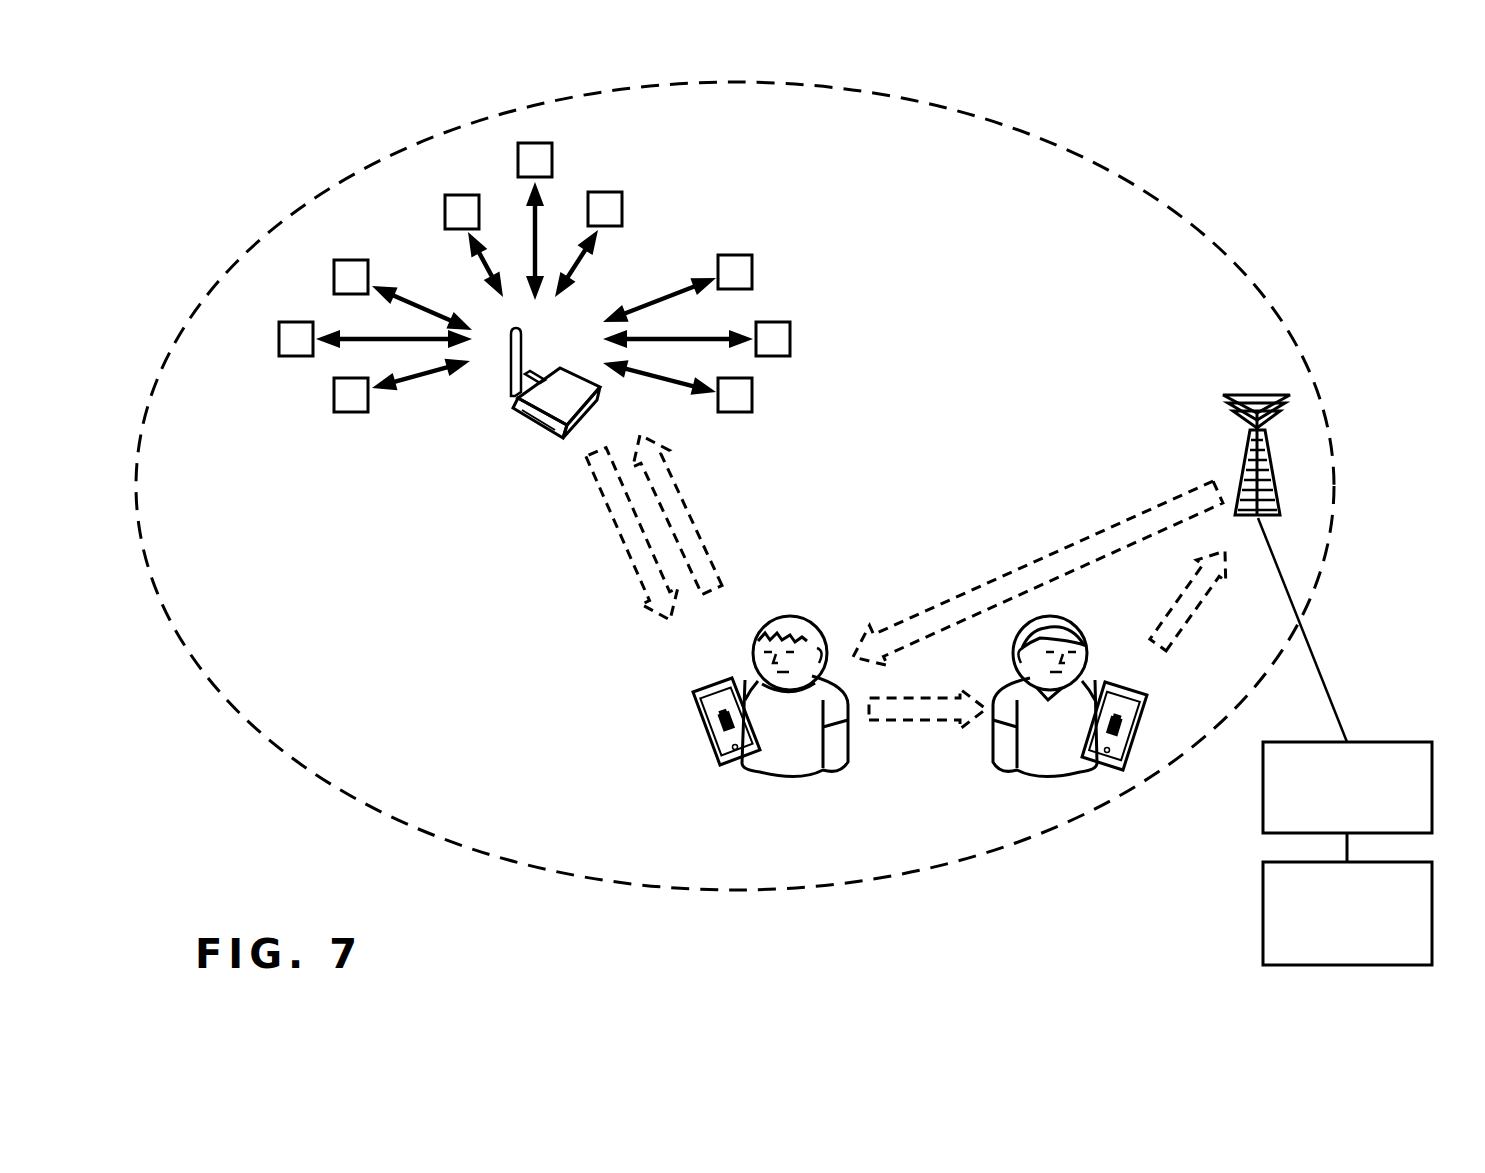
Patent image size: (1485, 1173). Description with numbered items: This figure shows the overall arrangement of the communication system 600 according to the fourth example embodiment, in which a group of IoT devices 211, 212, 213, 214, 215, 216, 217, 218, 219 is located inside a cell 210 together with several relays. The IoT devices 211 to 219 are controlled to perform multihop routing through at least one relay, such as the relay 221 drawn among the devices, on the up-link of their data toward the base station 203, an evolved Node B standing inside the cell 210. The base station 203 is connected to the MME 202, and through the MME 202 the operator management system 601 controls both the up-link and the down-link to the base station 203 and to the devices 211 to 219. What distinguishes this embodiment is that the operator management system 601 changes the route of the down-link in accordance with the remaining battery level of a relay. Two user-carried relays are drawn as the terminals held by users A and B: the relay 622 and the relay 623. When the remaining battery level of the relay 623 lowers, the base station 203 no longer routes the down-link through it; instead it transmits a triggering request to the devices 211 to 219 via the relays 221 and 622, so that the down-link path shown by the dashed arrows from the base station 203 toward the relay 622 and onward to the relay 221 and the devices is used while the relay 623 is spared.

The communication system 600 is at (255, 188).
The cell 210 is at (1148, 184).
The relay 221 is at (528, 412).
The IoT device 211 is at (334, 272).
The IoT device 212 is at (279, 334).
The IoT device 213 is at (334, 392).
The IoT device 214 is at (753, 395).
The IoT device 215 is at (758, 332).
The IoT device 216 is at (730, 255).
The IoT device 217 is at (622, 205).
The IoT device 218 is at (518, 160).
The IoT device 219 is at (445, 212).
The base station 203 is at (1228, 400).
The MME 202 is at (1396, 742).
The operator management system 601 is at (1263, 888).
The relay 622 is at (720, 690).
The relay 623 is at (1122, 688).